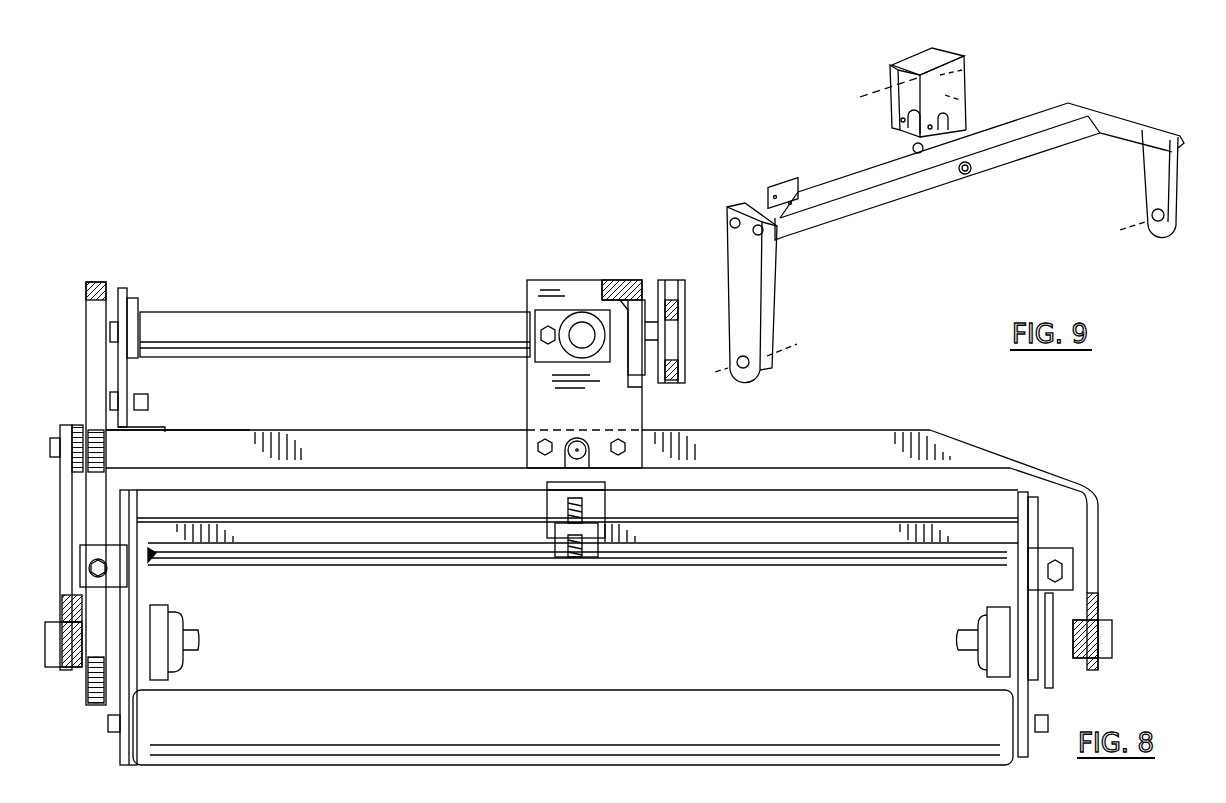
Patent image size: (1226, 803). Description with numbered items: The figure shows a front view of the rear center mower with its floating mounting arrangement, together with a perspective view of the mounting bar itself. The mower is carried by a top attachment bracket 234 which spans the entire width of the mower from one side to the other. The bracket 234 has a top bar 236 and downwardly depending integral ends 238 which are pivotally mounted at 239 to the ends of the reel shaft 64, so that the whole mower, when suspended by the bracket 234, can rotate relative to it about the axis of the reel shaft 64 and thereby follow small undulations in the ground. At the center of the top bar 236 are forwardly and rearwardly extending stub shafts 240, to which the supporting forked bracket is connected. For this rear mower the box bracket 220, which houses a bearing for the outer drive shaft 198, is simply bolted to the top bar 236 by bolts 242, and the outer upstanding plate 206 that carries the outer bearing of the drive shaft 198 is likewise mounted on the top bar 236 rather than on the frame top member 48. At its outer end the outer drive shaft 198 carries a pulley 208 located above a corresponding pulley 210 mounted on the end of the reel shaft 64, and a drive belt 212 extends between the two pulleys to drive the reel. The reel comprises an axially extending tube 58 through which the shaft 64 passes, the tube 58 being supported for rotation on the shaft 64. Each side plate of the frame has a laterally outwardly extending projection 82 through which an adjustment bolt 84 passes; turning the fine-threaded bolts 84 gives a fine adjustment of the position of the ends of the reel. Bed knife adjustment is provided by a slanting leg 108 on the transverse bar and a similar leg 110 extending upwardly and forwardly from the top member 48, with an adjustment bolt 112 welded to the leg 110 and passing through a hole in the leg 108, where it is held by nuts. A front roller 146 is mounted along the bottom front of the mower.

In FIG. 8, the top member 48 is at (690, 512).
In FIG. 8, the tube 58 is at (170, 616).
In FIG. 8, the shaft 64 is at (192, 636).
In FIG. 8, the projection 82 is at (88, 548).
In FIG. 8, the adjustment bolt 84 is at (89, 568).
In FIG. 8, the leg 108 is at (558, 540).
In FIG. 8, the leg 110 is at (547, 492).
In FIG. 8, the adjustment bolt 112 is at (578, 560).
In FIG. 8, the front roller 146 is at (677, 706).
In FIG. 8, the outer drive shaft 198 is at (316, 312).
In FIG. 8, the outer upstanding plate 206 is at (130, 380).
In FIG. 8, the pulley 208 is at (86, 312).
In FIG. 8, the pulley 210 is at (90, 704).
In FIG. 8, the drive belt 212 is at (96, 284).
In FIG. 8, the box bracket 220 is at (570, 290).
In FIG. 9, the box bracket 220 is at (915, 57).
In FIG. 8, the top attachment bracket 234 is at (358, 428).
In FIG. 9, the top attachment bracket 234 is at (1040, 108).
In FIG. 8, the top bar 236 is at (440, 432).
In FIG. 9, the top bar 236 is at (1004, 132).
In FIG. 9, the ends 238 is at (750, 270).
In FIG. 8, the pivot mounting 239 is at (1093, 634).
In FIG. 9, the stub shafts 240 is at (912, 148).
In FIG. 8, the bolts 242 is at (618, 438).